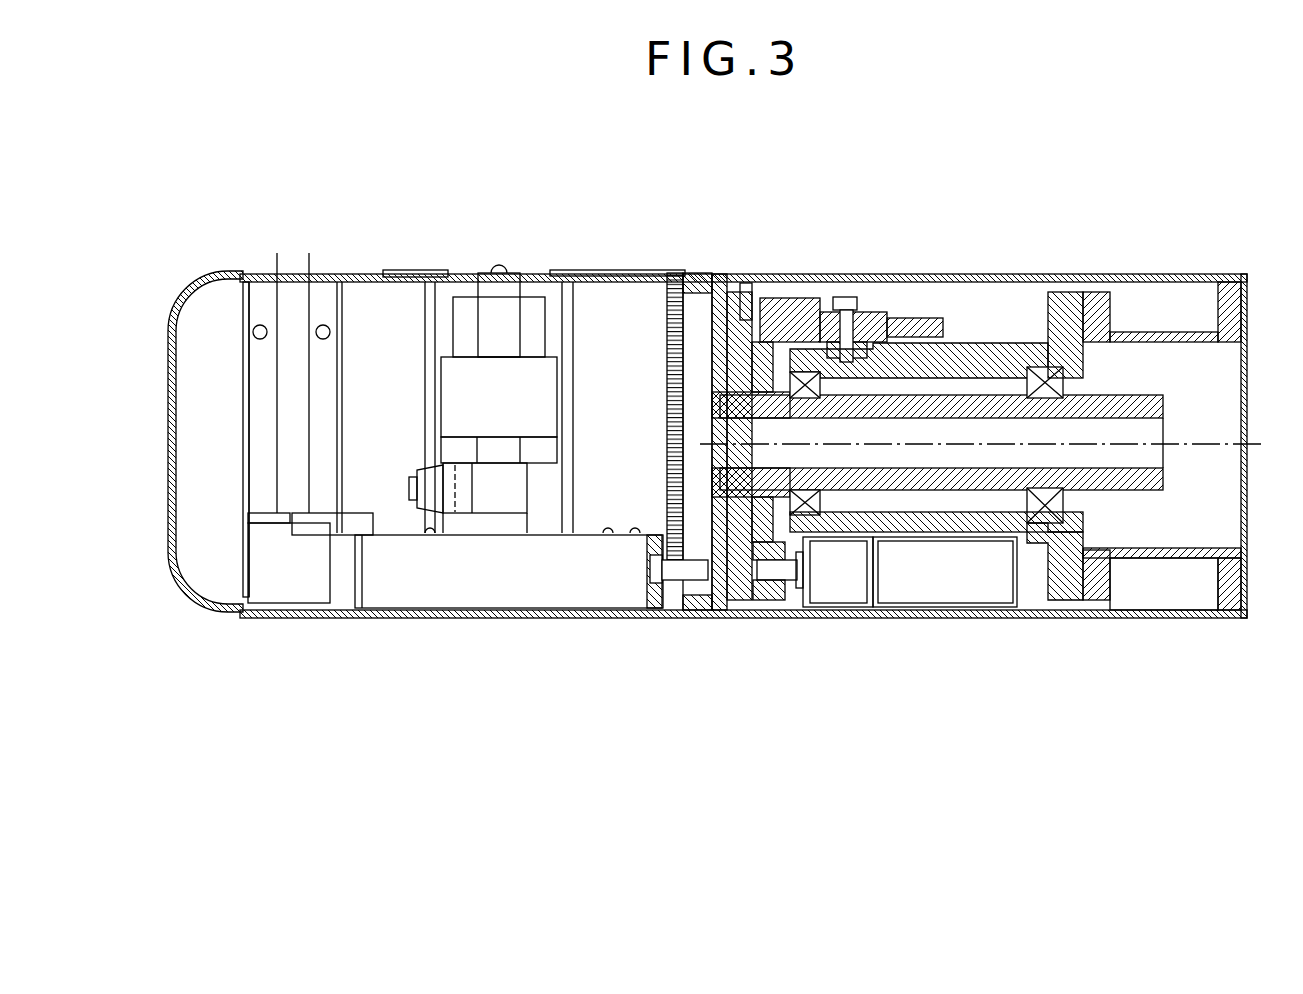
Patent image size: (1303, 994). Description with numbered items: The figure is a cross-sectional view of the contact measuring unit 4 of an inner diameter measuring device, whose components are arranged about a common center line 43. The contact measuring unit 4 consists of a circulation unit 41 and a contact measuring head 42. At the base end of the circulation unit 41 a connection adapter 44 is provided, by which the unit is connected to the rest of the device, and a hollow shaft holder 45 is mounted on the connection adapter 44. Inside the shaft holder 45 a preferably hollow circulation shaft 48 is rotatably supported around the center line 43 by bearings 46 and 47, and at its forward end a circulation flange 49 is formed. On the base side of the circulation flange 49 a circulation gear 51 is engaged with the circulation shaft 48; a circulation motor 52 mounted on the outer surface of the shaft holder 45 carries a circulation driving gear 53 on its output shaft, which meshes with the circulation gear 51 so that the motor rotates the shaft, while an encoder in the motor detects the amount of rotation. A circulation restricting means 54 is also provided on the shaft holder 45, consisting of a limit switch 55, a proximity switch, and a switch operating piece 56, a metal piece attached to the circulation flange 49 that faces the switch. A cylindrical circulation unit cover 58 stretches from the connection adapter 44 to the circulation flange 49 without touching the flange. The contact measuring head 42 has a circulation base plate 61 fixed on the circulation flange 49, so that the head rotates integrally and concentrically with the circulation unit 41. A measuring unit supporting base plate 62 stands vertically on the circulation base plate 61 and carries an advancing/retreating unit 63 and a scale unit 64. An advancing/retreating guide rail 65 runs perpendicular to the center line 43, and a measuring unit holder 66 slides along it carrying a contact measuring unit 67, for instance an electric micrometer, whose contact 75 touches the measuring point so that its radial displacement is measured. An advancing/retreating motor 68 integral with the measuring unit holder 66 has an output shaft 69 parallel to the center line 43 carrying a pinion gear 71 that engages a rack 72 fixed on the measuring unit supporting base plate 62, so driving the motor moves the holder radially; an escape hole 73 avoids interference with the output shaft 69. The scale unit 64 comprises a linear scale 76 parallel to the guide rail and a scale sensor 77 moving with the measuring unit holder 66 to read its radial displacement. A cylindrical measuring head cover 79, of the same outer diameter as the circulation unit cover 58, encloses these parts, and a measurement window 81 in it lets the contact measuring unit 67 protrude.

The contact measuring unit 4 is at (734, 147).
The circulation unit 41 is at (953, 266).
The contact measuring head 42 is at (297, 272).
The center line 43 is at (1248, 444).
The connection adapter 44 is at (1163, 332).
The shaft holder 45 is at (1012, 347).
The bearing 46 is at (1062, 394).
The bearing 47 is at (780, 342).
The circulation shaft 48 is at (950, 492).
The circulation flange 49 is at (733, 602).
The circulation gear 51 is at (806, 546).
The circulation motor 52 is at (968, 608).
The circulation driving gear 53 is at (770, 602).
The circulation restricting means 54 is at (812, 300).
The limit switch 55 is at (873, 308).
The switch operating piece 56 is at (740, 284).
The circulation unit cover 58 is at (1050, 296).
The circulation base plate 61 is at (708, 610).
The measuring unit supporting base plate 62 is at (362, 306).
The advancing/retreating unit 63 is at (586, 397).
The scale unit 64 is at (226, 396).
The advancing/retreating guide rail 65 is at (427, 317).
The measuring unit holder 66 is at (473, 395).
The contact measuring unit 67 is at (477, 320).
The advancing/retreating motor 68 is at (587, 533).
The output shaft 69 is at (672, 526).
The pinion gear 71 is at (673, 582).
The rack 72 is at (667, 332).
The escape hole 73 is at (695, 431).
The contact 75 is at (500, 265).
The linear scale 76 is at (284, 307).
The scale sensor 77 is at (248, 572).
The measuring head cover 79 is at (175, 506).
The measurement window 81 is at (535, 277).